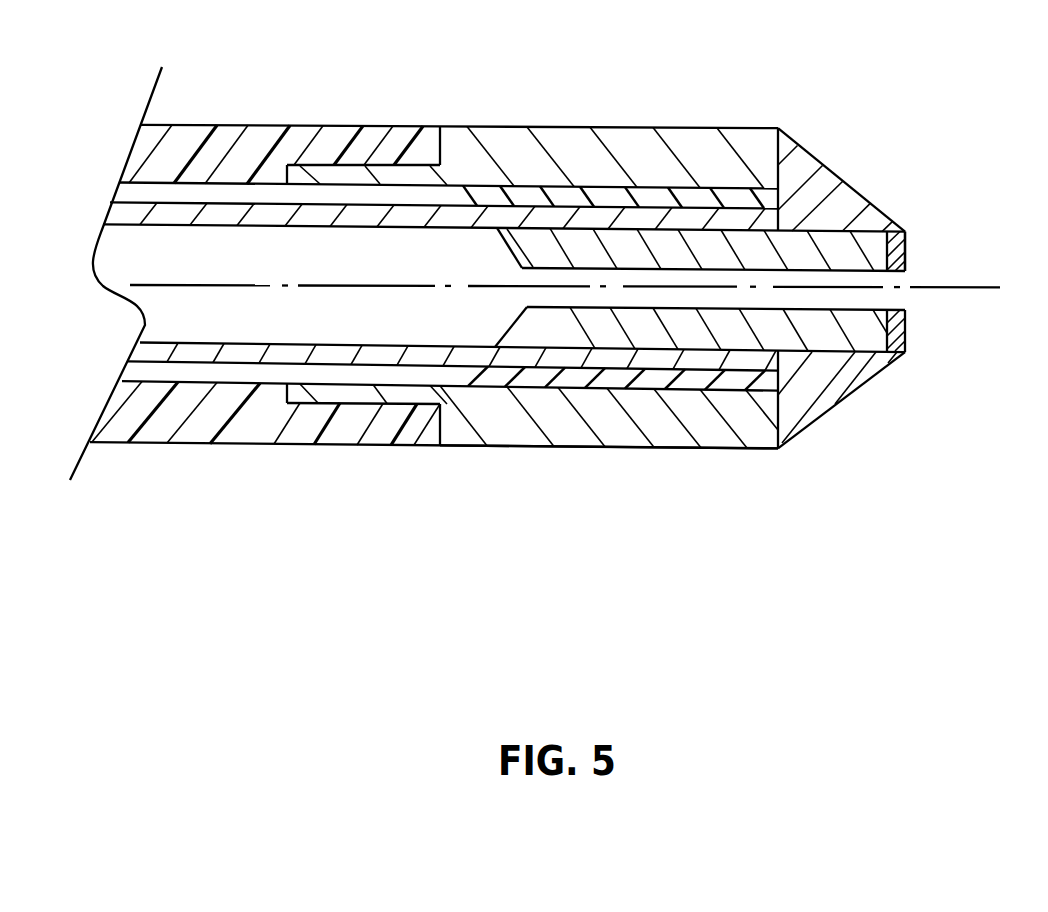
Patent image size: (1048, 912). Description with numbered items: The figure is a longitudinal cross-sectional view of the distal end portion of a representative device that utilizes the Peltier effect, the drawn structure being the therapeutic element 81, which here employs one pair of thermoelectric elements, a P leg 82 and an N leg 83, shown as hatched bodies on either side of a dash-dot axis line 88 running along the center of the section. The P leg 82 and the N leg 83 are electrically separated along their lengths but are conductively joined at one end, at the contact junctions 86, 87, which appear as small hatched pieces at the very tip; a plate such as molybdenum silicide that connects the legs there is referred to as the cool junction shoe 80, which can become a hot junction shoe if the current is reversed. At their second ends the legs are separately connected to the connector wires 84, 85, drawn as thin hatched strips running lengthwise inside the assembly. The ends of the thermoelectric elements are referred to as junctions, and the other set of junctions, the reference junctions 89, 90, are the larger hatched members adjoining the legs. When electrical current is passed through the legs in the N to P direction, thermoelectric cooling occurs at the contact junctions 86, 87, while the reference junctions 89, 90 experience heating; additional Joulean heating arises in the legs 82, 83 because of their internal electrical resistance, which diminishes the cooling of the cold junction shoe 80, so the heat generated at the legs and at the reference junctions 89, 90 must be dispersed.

The cool junction shoe 80 is at (910, 251).
The therapeutic element 81 is at (535, 114).
The P leg 82 is at (795, 230).
The N leg 83 is at (833, 340).
The connector wire 84 is at (233, 212).
The connector wire 85 is at (250, 357).
The contact junction 86 is at (910, 242).
The contact junction 87 is at (905, 345).
The longitudinal axis 88 is at (949, 287).
The reference junction 89 is at (533, 222).
The reference junction 90 is at (575, 345).